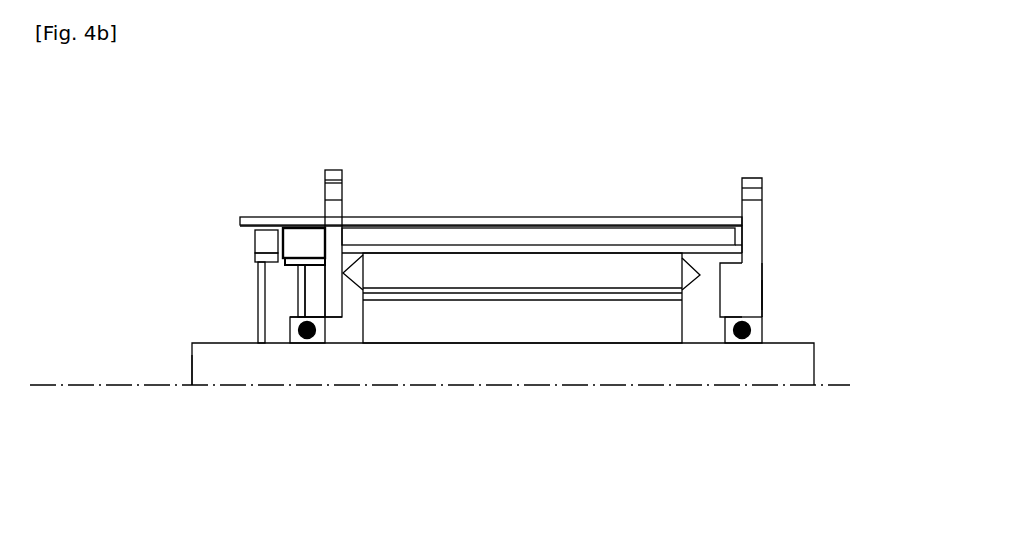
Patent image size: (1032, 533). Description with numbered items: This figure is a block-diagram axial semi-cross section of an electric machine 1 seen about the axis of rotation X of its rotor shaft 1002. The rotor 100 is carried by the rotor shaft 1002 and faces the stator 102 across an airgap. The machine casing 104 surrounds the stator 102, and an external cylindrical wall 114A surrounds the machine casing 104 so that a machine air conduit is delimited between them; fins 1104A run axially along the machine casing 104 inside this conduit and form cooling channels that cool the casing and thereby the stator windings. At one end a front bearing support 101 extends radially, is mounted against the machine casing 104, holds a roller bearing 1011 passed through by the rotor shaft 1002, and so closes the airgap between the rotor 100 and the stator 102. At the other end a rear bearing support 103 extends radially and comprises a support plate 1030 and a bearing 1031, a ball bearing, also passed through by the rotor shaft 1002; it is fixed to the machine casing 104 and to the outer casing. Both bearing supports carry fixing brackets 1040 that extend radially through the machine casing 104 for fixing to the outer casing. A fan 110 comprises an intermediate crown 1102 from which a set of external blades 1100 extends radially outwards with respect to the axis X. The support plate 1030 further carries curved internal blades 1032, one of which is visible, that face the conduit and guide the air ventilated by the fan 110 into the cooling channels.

The substrate processing apparatus 1 is at (822, 291).
The rotor 100 is at (438, 409).
The rotor shaft 1002 is at (225, 358).
The front bearing support 101 is at (750, 283).
The roller bearing 1011 is at (762, 323).
The stator 102 is at (585, 283).
The rear bearing support 103 is at (333, 322).
The support plate 1030 is at (327, 287).
The bearing 1031 is at (312, 336).
The internal blade 1032 is at (298, 243).
The machine casing 104 is at (548, 247).
The fixing bracket 1040 is at (328, 178).
The fan 110 is at (175, 275).
The external blade 1100 is at (257, 242).
The intermediate crown 1102 is at (257, 273).
The external cylindrical wall 114A is at (477, 222).
The fin 1104A is at (627, 237).
The axis of rotation X is at (302, 385).